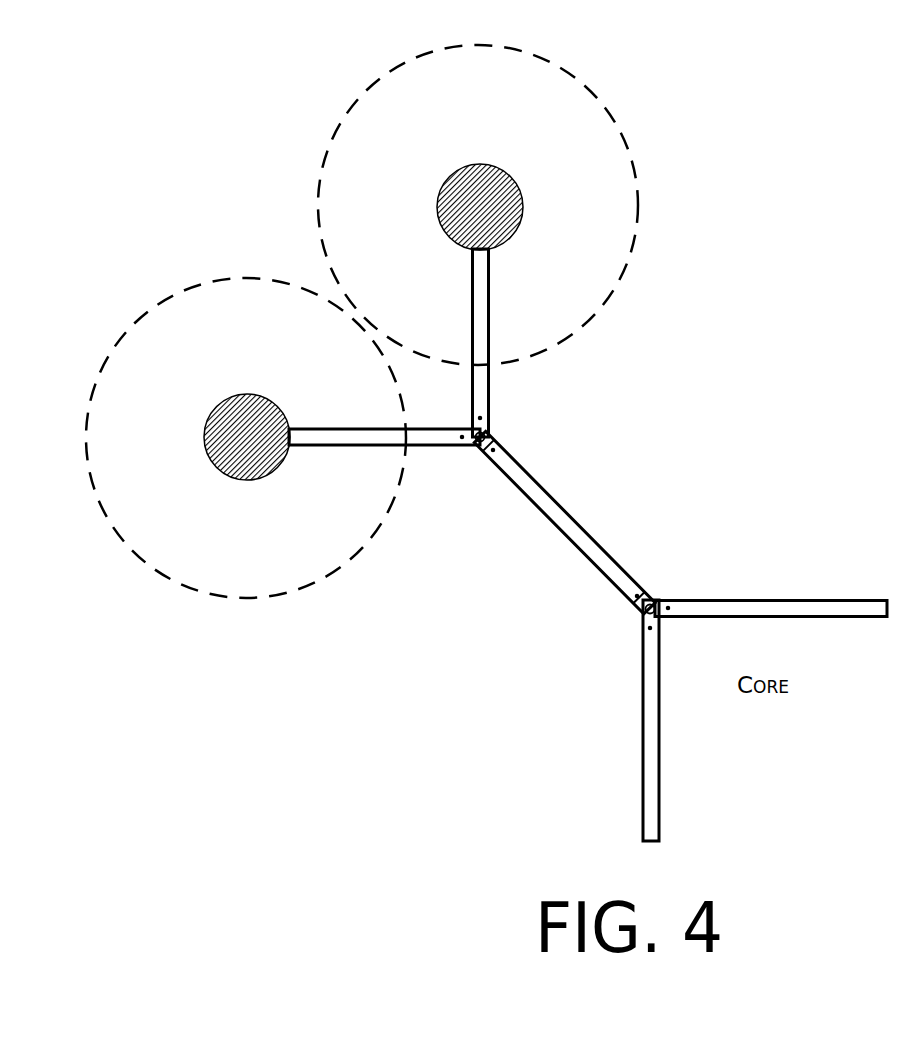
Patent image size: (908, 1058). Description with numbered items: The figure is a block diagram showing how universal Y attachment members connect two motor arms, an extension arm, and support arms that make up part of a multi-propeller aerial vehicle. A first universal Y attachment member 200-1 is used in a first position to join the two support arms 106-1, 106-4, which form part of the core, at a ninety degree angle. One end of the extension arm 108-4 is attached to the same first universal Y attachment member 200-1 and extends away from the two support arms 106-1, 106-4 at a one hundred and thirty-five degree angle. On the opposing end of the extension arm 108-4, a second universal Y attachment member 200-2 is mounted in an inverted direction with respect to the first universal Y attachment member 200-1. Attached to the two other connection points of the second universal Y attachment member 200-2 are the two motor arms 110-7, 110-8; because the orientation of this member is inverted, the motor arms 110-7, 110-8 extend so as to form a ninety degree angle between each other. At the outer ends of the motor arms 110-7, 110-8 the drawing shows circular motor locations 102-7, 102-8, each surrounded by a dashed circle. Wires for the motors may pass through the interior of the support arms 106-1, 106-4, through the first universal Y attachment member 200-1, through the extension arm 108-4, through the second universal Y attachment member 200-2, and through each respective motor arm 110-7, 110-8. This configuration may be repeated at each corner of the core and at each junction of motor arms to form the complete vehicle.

The antenna element 102-7 is at (253, 394).
The antenna element 102-8 is at (521, 190).
The motor arm 110-7 is at (435, 447).
The motor arm 110-8 is at (491, 381).
The second universal Y attachment member 200-2 is at (492, 437).
The extension arm 108-4 is at (587, 558).
The first universal Y attachment member 200-1 is at (658, 600).
The support arm 106-1 is at (792, 600).
The support arm 106-4 is at (642, 702).